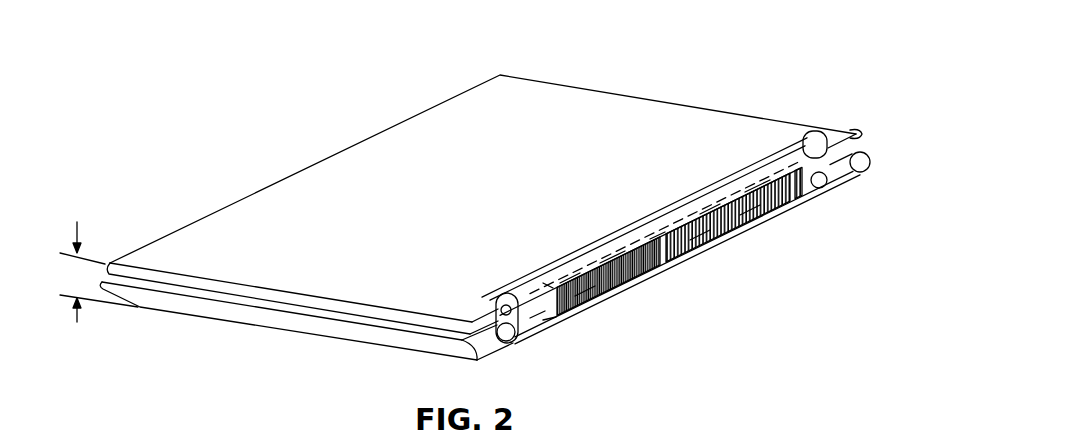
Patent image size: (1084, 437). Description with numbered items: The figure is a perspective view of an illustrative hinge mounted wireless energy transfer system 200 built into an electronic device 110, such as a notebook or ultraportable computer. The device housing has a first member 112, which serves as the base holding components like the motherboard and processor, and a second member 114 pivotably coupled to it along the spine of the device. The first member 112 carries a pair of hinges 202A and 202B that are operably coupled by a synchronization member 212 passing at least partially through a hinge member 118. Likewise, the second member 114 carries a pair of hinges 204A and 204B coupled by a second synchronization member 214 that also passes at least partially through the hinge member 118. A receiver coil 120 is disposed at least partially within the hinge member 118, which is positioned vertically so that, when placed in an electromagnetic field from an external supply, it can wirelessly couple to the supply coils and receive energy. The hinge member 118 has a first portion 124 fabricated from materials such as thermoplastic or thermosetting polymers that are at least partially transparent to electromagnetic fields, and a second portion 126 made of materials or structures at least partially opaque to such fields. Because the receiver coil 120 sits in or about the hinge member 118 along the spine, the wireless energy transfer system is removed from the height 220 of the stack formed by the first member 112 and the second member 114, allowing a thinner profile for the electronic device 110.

The hinge mounted wireless energy transfer system 200 is at (832, 64).
The electronic device 110 is at (634, 70).
The first member 112 is at (272, 318).
The second member 114 is at (476, 223).
The hinge member 118 is at (820, 131).
The receiver coil 120 is at (752, 226).
The first portion of the hinge member 124 is at (617, 295).
The second portion of the hinge member 126 is at (656, 215).
The hinge 202A is at (498, 344).
The hinge 202B is at (862, 170).
The hinge 204A is at (482, 310).
The hinge 204B is at (863, 133).
The synchronization member 212 is at (548, 318).
The synchronization member 214 is at (548, 285).
The height 220 is at (98, 272).